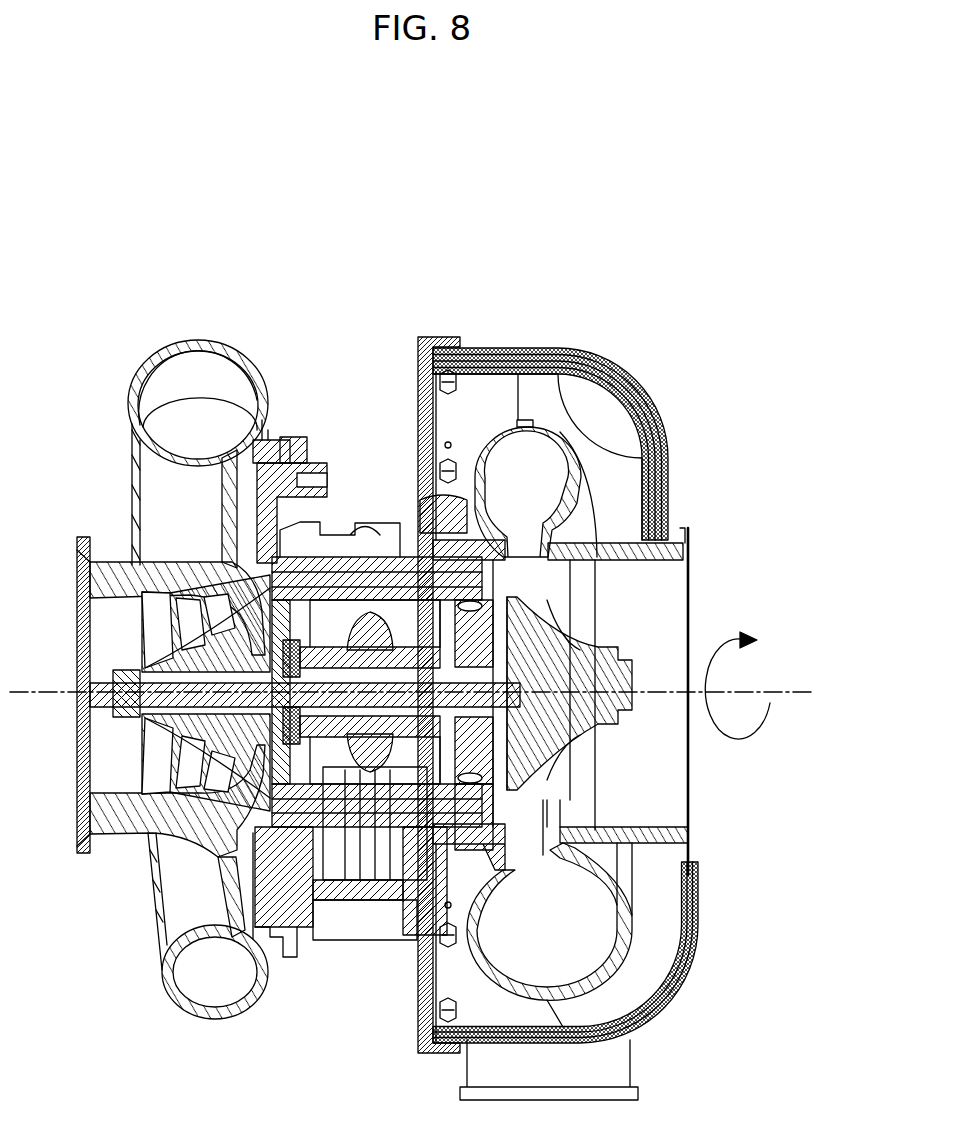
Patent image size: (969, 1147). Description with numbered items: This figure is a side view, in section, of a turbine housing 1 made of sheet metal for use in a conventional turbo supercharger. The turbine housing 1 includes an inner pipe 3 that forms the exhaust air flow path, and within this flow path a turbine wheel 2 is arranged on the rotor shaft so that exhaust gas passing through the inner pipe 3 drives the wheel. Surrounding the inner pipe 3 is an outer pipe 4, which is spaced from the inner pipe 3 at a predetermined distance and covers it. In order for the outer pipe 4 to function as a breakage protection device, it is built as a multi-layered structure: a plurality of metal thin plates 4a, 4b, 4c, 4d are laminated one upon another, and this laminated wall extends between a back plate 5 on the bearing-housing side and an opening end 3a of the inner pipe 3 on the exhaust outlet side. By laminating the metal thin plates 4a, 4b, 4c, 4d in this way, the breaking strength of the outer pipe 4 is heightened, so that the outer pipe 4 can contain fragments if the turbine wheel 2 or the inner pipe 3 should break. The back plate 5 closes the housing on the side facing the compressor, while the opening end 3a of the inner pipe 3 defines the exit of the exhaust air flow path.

The turbine housing 1 is at (412, 675).
The turbine wheel 2 is at (596, 654).
The inner pipe 3 is at (558, 430).
The opening end 3a is at (689, 548).
The outer pipe 4 is at (586, 640).
The metal thin plate 4a is at (636, 396).
The metal thin plate 4b is at (654, 422).
The metal thin plate 4c is at (660, 452).
The metal thin plate 4d is at (664, 482).
The back plate 5 is at (420, 382).